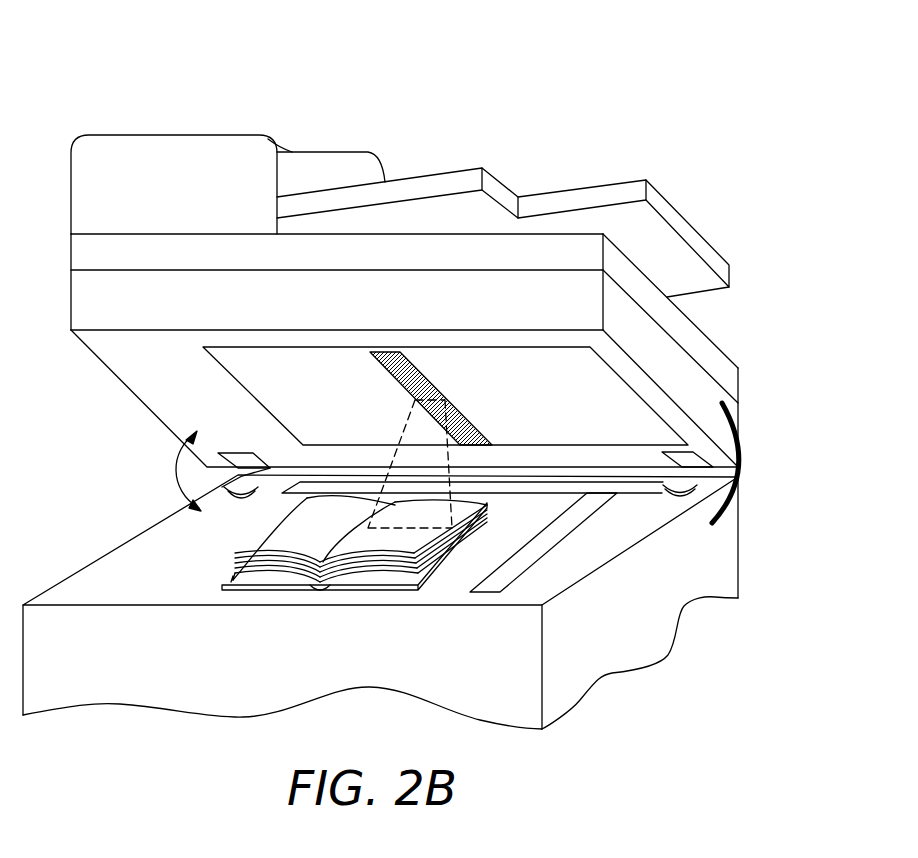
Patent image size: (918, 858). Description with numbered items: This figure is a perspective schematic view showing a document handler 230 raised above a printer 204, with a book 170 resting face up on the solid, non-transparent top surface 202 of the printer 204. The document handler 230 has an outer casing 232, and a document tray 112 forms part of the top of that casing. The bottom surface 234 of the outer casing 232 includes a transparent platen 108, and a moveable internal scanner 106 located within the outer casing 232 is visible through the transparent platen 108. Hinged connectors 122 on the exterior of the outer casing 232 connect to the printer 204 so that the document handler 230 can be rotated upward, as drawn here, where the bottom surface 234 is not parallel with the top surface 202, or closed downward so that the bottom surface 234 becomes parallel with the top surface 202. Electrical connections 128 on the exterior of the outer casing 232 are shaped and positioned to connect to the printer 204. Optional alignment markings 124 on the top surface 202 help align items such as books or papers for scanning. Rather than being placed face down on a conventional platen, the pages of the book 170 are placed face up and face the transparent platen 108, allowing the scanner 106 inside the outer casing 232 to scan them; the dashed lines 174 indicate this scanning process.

The document handler 230 is at (369, 110).
The outer casing 232 is at (173, 135).
The document tray 112 is at (556, 234).
The bottom surface 234 is at (145, 378).
The transparent platen 108 is at (579, 413).
The moveable internal scanner 106 is at (392, 375).
The dashed lines 174 is at (402, 430).
The hinged connectors 122 is at (233, 452).
The electrical connections 128 is at (752, 470).
The top surface 202 is at (168, 543).
The printer 204 is at (641, 637).
The alignment markings 124 is at (597, 520).
The book 170 is at (290, 532).